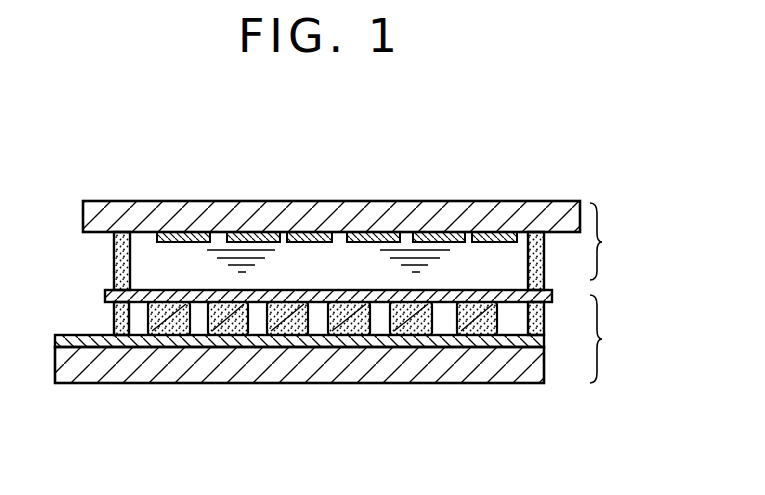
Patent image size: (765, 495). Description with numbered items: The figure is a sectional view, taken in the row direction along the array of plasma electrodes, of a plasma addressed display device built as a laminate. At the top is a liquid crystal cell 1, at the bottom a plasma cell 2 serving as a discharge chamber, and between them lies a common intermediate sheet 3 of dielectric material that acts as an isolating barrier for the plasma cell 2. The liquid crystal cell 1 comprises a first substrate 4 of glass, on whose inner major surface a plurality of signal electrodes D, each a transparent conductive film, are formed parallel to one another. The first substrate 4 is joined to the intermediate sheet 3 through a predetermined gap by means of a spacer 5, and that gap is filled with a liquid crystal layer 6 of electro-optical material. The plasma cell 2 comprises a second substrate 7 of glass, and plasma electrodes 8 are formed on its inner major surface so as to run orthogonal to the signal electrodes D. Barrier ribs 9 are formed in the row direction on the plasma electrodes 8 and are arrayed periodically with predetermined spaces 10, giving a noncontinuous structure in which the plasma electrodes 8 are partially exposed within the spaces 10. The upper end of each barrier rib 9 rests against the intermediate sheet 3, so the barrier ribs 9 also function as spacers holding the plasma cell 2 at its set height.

The liquid crystal cell 1 is at (604, 241).
The plasma cell 2 is at (603, 339).
The common intermediate sheet 3 is at (553, 297).
The first substrate 4 is at (215, 206).
The spacer 5 is at (113, 258).
The liquid crystal layer 6 is at (157, 262).
The second substrate 7 is at (279, 370).
The plasma electrodes 8 is at (117, 347).
The barrier ribs 9 is at (483, 338).
The spaces 10 is at (444, 322).
The signal electrodes D is at (437, 236).